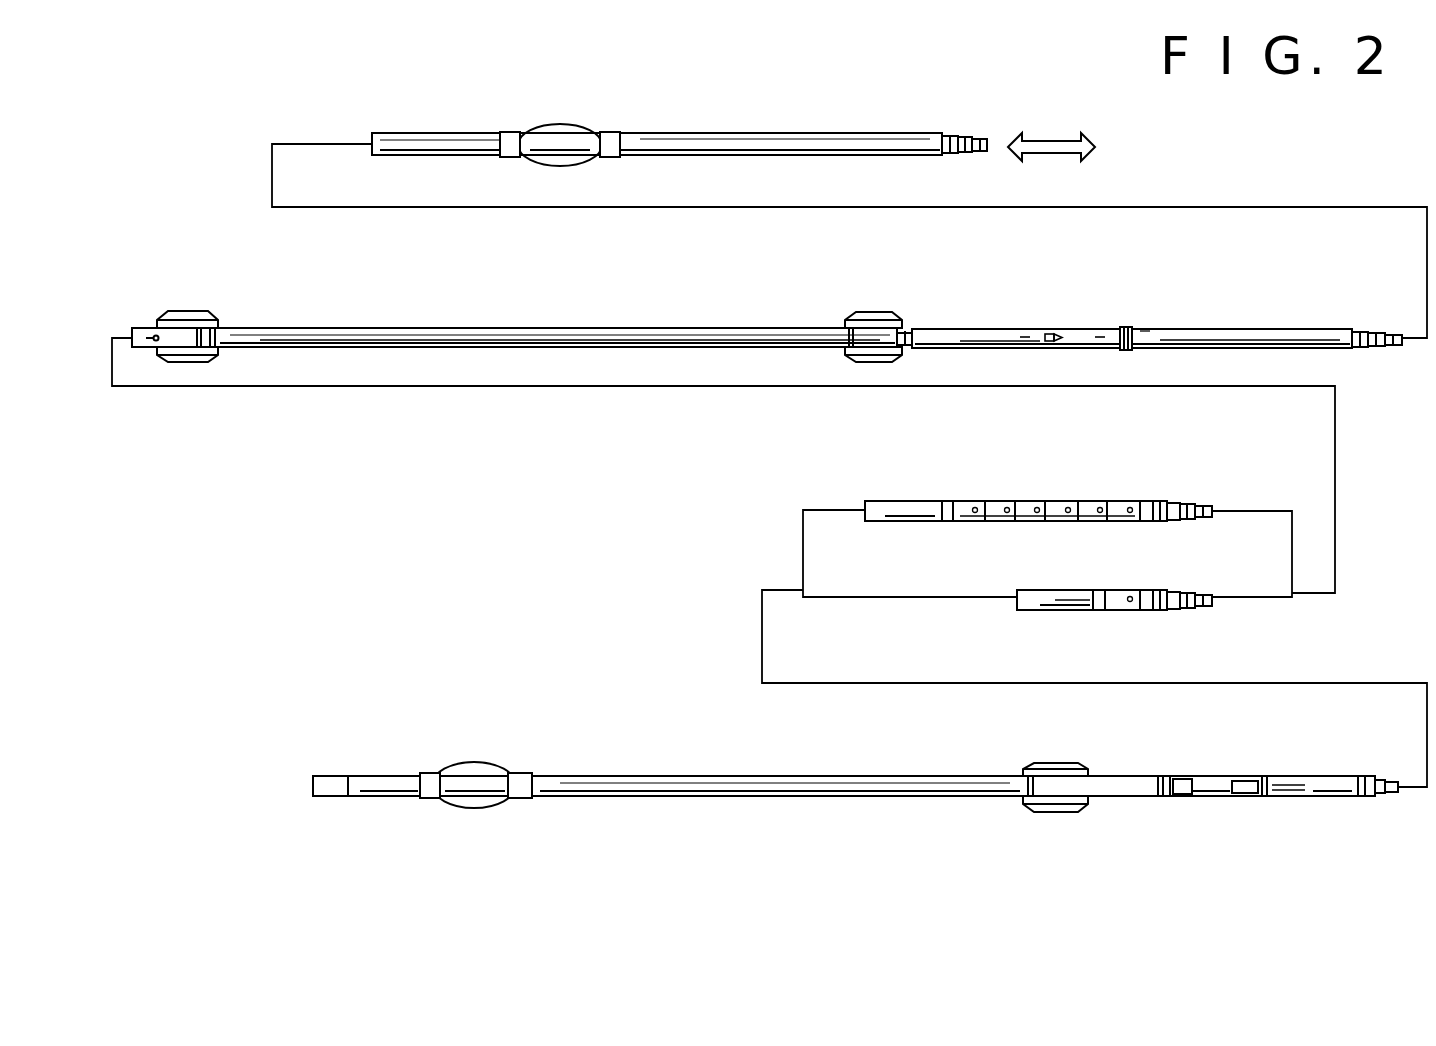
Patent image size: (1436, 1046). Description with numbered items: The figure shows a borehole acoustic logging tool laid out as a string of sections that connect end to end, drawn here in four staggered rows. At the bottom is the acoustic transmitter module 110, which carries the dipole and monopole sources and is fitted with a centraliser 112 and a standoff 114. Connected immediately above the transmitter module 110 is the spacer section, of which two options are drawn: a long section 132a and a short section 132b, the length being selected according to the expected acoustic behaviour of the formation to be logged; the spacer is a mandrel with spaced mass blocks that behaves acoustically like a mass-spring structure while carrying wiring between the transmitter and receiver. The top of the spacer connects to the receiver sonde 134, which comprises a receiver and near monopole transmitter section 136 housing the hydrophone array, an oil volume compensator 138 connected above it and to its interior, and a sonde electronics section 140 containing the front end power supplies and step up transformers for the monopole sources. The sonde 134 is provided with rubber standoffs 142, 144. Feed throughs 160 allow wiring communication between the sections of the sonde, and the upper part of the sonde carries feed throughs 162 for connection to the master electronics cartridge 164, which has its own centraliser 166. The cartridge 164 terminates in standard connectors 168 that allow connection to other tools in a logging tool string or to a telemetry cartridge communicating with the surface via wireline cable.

The acoustic transmitter module 110 is at (812, 808).
The centraliser 112 is at (498, 806).
The standoff 114 is at (1072, 812).
The long section 132a is at (968, 510).
The short section 132b is at (948, 595).
The receiver sonde 134 is at (715, 320).
The receiver and near monopole transmitter section 136 is at (522, 328).
The oil volume compensator 138 is at (1035, 328).
The sonde electronics section 140 is at (1280, 328).
The rubber standoff 142 is at (193, 312).
The rubber standoff 144 is at (878, 312).
The feed throughs 160 is at (1125, 350).
The feed throughs 162 is at (1394, 350).
The master electronics cartridge 164 is at (727, 132).
The centraliser 166 is at (540, 123).
The standard connectors 168 is at (980, 133).